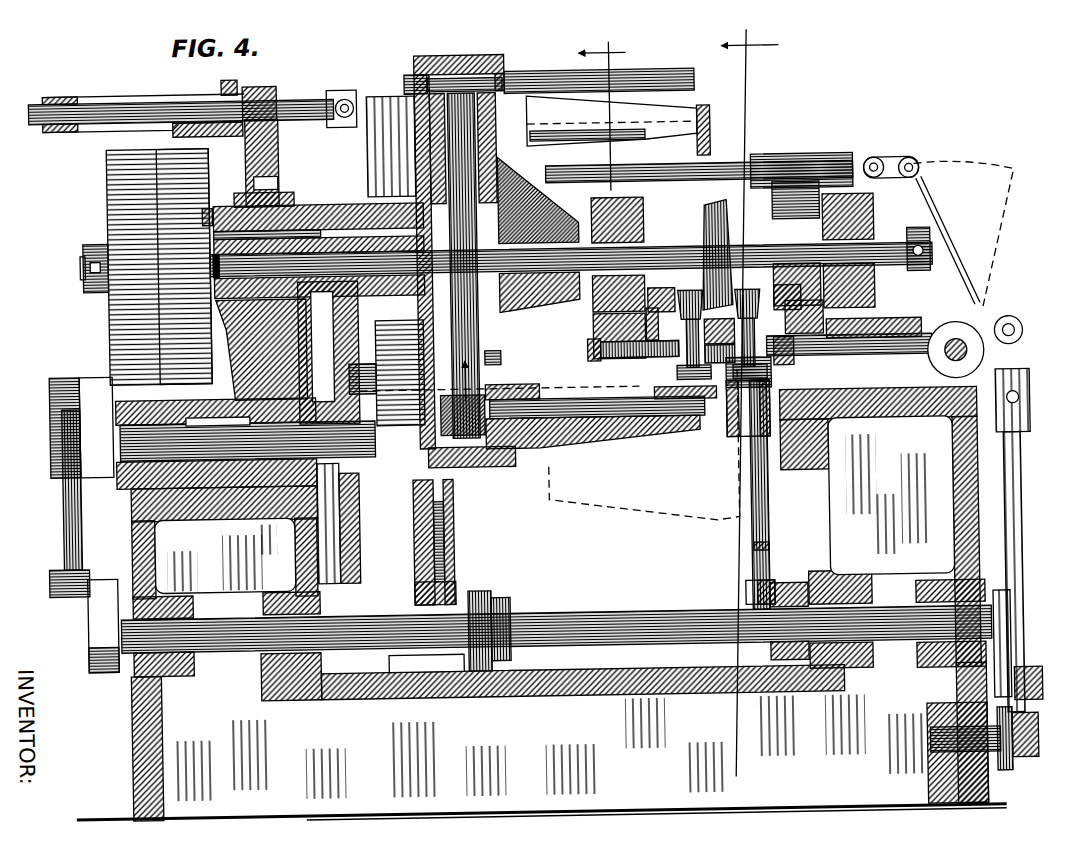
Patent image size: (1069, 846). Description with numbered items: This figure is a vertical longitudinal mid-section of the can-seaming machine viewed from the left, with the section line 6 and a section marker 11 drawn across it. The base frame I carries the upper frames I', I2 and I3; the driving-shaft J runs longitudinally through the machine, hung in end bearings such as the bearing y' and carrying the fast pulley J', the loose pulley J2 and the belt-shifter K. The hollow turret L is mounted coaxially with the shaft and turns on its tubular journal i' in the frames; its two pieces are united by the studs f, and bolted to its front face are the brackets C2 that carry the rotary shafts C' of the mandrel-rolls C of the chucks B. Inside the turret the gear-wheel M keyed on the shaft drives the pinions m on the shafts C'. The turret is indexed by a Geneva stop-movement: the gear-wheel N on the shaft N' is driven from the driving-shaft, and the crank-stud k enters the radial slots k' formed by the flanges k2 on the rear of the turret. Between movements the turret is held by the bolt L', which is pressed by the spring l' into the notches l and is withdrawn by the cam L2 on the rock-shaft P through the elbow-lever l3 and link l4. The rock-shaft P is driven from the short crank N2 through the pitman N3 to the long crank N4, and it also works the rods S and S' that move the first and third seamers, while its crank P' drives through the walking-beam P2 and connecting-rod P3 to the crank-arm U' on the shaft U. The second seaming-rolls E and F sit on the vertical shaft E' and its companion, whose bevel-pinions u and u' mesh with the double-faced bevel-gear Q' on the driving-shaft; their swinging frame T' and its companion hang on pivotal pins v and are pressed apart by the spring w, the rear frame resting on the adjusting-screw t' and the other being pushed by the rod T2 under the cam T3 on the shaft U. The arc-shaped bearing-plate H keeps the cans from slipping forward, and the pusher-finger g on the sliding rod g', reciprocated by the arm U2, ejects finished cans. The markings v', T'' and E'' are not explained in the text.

The base frame I is at (538, 605).
The upper frame I' is at (218, 534).
The upper frame I2 is at (853, 337).
The upper frame I3 is at (619, 332).
The belt-shifter K is at (193, 140).
The turret L is at (459, 249).
The bolt L' is at (409, 467).
The cam L2 is at (455, 583).
The gear-wheel M is at (467, 266).
The pinion m is at (421, 132).
The crank-stud k is at (363, 366).
The radial slot k' is at (391, 146).
The flange k2 is at (383, 301).
The driving-shaft J is at (493, 253).
The fast pulley J' is at (184, 267).
The loose pulley J2 is at (160, 267).
The chuck B is at (598, 70).
The stud f is at (562, 74).
The mandrel-roll C is at (709, 284).
The rotary shaft C' is at (530, 274).
The bracket C2 is at (591, 280).
The pusher-finger g is at (559, 150).
The sliding rod g' is at (634, 247).
The double-faced bevel-gear Q' is at (700, 184).
The turret journal i' is at (578, 234).
The section line 11 is at (606, 111).
The section line 6 is at (756, 402).
The end bearing y' is at (840, 230).
The rock-shaft U is at (1006, 314).
The crank-arm U' is at (1034, 302).
The arm U2 is at (939, 232).
The bevel-pinion u is at (749, 322).
The bevel-pinion u' is at (704, 290).
The pivotal pin v is at (662, 297).
The bearing v' is at (788, 297).
The pivoted frame T' is at (719, 328).
The block T'' is at (656, 371).
The rod T2 is at (850, 353).
The cam T3 is at (955, 349).
The spring w is at (720, 358).
The seaming-roll E is at (750, 408).
The vertical shaft E' is at (658, 324).
The housing part E'' is at (793, 341).
The adjusting-screw t' is at (623, 345).
The seaming-roll F is at (708, 378).
The bearing-plate H is at (643, 444).
The rod S is at (766, 495).
The rod S' is at (775, 520).
The rock-shaft P is at (556, 629).
The crank P' is at (988, 670).
The walking-beam P2 is at (1018, 746).
The connecting-rod P3 is at (1023, 540).
The gear-wheel N is at (321, 394).
The shaft N' is at (246, 429).
The short crank N2 is at (81, 427).
The pitman N3 is at (61, 490).
The long crank N4 is at (88, 612).
The notch l is at (466, 481).
The spring l' is at (455, 541).
The elbow-lever l3 is at (482, 567).
The link l4 is at (444, 557).